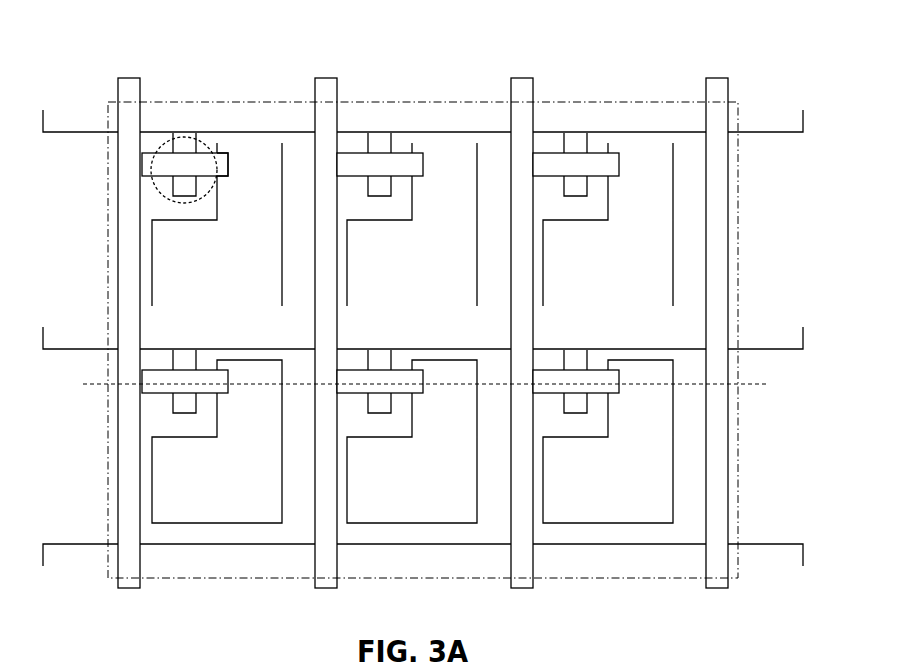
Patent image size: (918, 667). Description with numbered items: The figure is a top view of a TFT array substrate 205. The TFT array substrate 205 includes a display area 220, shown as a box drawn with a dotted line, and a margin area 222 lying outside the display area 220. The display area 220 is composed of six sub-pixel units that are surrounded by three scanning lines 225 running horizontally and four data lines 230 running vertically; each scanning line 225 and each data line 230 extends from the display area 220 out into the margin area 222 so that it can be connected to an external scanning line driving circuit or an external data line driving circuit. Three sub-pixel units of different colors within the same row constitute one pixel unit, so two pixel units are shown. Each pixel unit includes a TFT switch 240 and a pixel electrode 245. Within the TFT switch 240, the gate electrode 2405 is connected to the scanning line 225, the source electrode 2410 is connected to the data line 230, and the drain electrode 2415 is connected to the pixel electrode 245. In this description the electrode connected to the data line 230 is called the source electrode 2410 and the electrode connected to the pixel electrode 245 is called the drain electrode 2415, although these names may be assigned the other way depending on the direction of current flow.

The TFT array substrate 205 is at (423, 300).
The display area 220 is at (638, 100).
The margin area 222 is at (770, 220).
The scanning line 225 is at (95, 327).
The data line 230 is at (326, 78).
The TFT switch 240 is at (172, 142).
The gate electrode 2405 is at (183, 142).
The source electrode 2410 is at (162, 166).
The drain electrode 2415 is at (208, 162).
The pixel electrode 245 is at (252, 157).